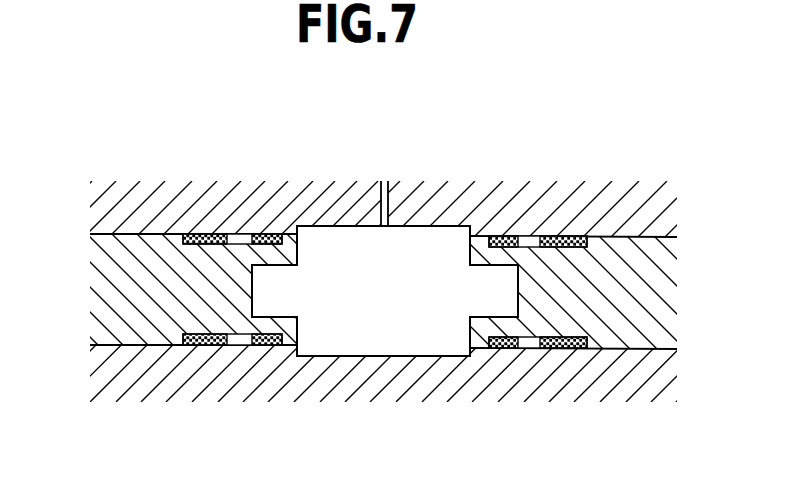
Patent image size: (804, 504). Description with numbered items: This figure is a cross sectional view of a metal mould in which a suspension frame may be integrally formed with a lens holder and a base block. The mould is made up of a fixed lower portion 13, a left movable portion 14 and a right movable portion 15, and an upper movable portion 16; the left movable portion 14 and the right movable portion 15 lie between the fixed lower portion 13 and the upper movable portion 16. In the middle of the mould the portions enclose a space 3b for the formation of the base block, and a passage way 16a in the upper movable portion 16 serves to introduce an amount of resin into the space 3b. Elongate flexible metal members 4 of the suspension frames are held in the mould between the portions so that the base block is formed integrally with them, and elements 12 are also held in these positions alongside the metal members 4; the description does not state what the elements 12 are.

The valve body portion 3b is at (425, 340).
The seal ring 4 is at (266, 234).
The packing ring 12 is at (192, 234).
The lower block 13 is at (333, 375).
The left side member 14 is at (108, 305).
The right side member 15 is at (657, 300).
The upper block 16 is at (477, 193).
The slit 16a is at (380, 200).